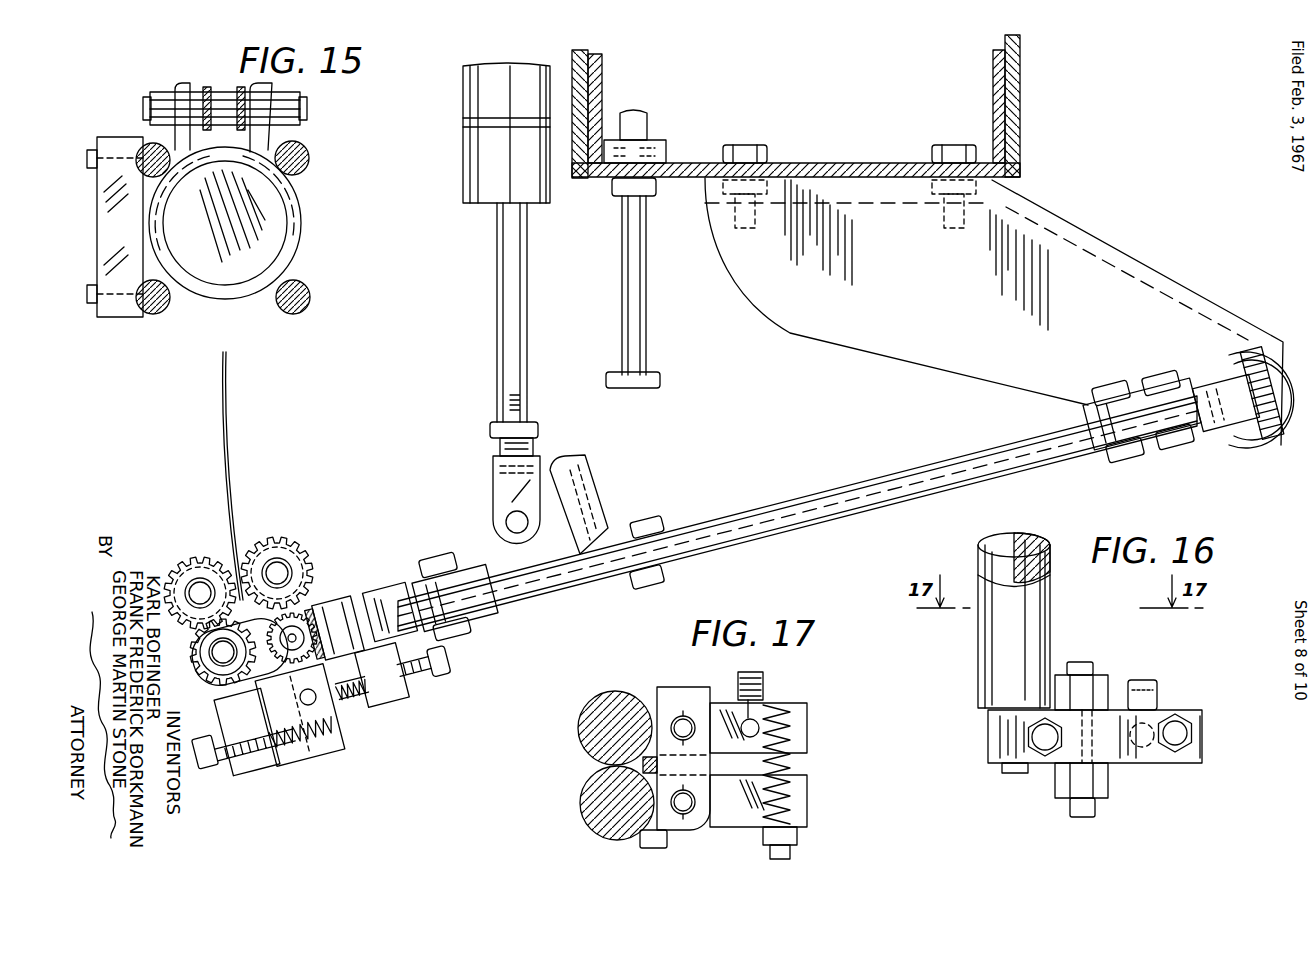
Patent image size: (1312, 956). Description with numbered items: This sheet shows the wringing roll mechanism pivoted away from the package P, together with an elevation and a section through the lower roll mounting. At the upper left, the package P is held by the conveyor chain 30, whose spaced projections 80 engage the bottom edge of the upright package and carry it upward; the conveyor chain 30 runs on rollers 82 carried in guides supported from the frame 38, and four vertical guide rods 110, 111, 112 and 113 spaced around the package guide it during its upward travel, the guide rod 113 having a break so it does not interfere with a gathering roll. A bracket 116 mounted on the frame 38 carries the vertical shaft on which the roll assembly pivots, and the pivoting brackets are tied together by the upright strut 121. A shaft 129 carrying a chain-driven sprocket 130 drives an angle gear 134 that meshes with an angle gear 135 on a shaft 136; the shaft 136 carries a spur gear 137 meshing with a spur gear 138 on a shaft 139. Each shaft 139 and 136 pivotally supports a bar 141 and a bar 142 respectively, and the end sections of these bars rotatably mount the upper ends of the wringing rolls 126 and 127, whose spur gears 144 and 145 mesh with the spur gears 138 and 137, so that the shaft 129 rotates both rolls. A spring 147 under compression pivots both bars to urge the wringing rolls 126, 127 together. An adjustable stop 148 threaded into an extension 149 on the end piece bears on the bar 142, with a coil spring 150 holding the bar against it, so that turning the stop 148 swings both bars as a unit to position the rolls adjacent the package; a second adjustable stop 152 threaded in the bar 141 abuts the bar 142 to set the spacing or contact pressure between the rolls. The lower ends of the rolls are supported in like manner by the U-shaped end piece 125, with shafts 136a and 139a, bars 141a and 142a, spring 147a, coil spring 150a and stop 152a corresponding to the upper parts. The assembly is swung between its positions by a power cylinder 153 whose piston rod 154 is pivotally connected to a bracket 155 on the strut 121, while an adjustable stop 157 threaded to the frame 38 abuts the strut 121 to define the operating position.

In FIG. 15, the pipe P is at (278, 240).
In FIG. 15, the conveyor chain 30 is at (228, 83).
In FIG. 15, the projections 80 is at (184, 84).
In FIG. 15, the rollers 82 is at (150, 100).
In FIG. 15, the vertical guide rod 110 is at (160, 310).
In FIG. 15, the vertical guide rod 111 is at (148, 148).
In FIG. 15, the vertical guide rod 112 is at (302, 158).
In FIG. 15, the vertical guide rod 113 is at (305, 298).
In FIG. 15, the frame 38 is at (896, 164).
In FIG. 15, the bracket 116 is at (946, 322).
In FIG. 15, the strut 121 is at (606, 492).
In FIG. 17, the U-shaped end piece 125 is at (700, 690).
In FIG. 16, the U-shaped end piece 125 is at (1106, 688).
In FIG. 15, the wringing roll 126 is at (178, 560).
In FIG. 17, the wringing roll 126 is at (582, 812).
In FIG. 16, the wringing roll 126 is at (993, 665).
In FIG. 15, the wringing roll 127 is at (279, 537).
In FIG. 17, the wringing roll 127 is at (582, 734).
In FIG. 16, the wringing roll 127 is at (1022, 540).
In FIG. 15, the shaft 129 is at (768, 506).
In FIG. 15, the sprocket 130 is at (1238, 352).
In FIG. 15, the angle gear 134 is at (372, 592).
In FIG. 15, the angle gear 135 is at (357, 644).
In FIG. 15, the shaft 136 is at (310, 647).
In FIG. 17, the shaft 136a is at (683, 714).
In FIG. 15, the spur gear 137 is at (358, 704).
In FIG. 15, the spur gear 138 is at (255, 735).
In FIG. 15, the shaft 139 is at (219, 668).
In FIG. 17, the shaft 139a is at (697, 812).
In FIG. 16, the shaft 139a is at (1082, 660).
In FIG. 15, the bar 141 is at (243, 770).
In FIG. 17, the bar 141a is at (803, 812).
In FIG. 15, the bar 142 is at (343, 747).
In FIG. 17, the bar 142a is at (808, 716).
In FIG. 15, the spur gear 144 is at (208, 560).
In FIG. 15, the spur gear 145 is at (302, 548).
In FIG. 15, the spring 147 is at (290, 740).
In FIG. 17, the spring 147a is at (795, 760).
In FIG. 16, the spring 147a is at (1175, 760).
In FIG. 15, the adjustable stop 148 is at (447, 667).
In FIG. 17, the adjustable stop 148 is at (765, 688).
In FIG. 15, the extension 149 is at (388, 694).
In FIG. 15, the coil spring 150 is at (358, 690).
In FIG. 17, the coil spring 150a is at (762, 675).
In FIG. 16, the coil spring 150a is at (1158, 690).
In FIG. 15, the adjustable stop 152 is at (220, 664).
In FIG. 17, the adjustable stop 152a is at (640, 842).
In FIG. 16, the adjustable stop 152a is at (1045, 755).
In FIG. 15, the power cylinder 153 is at (490, 166).
In FIG. 15, the piston rod 154 is at (500, 312).
In FIG. 15, the bracket 155 is at (540, 462).
In FIG. 15, the adjustable stop 157 is at (648, 350).